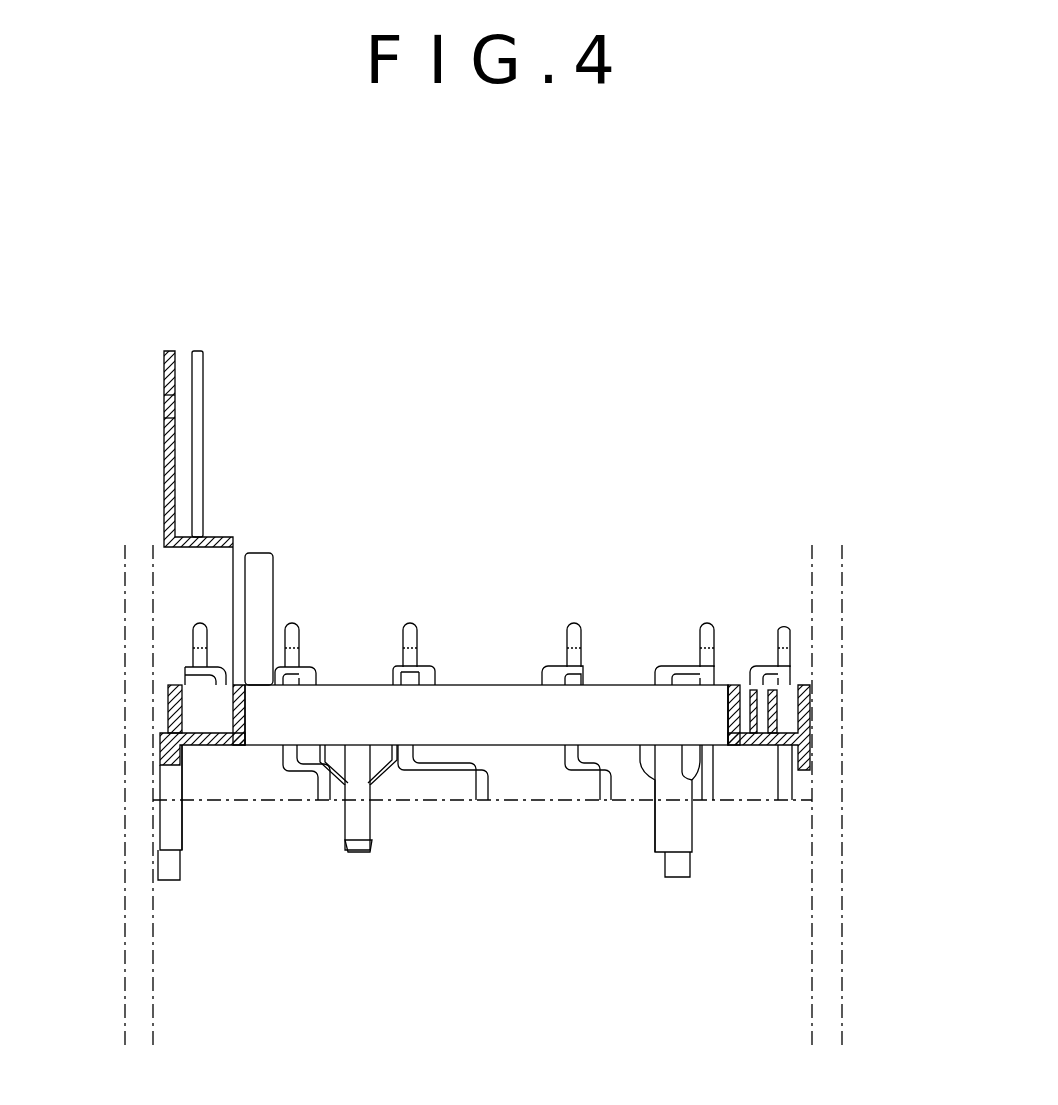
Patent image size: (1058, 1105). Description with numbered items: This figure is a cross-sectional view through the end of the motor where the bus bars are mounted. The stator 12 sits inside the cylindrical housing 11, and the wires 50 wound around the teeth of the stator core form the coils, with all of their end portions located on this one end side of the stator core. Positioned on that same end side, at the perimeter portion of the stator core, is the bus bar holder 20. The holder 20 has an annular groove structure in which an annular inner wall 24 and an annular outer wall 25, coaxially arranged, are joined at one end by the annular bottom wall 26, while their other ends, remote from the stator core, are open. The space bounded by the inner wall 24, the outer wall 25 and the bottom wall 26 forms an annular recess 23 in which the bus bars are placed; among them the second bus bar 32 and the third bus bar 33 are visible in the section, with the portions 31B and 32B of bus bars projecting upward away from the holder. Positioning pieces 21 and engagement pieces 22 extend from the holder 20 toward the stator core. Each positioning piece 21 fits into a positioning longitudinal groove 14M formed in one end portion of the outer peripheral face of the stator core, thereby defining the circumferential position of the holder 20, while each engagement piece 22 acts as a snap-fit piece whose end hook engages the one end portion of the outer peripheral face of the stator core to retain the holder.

The cylindrical housing 11 is at (830, 935).
The stator 12 is at (773, 1008).
The positioning longitudinal groove 14M is at (180, 873).
The bus bar holder 20 is at (488, 683).
The positioning piece 21 is at (178, 835).
The engagement piece 22 is at (345, 820).
The annular recess 23 is at (186, 682).
The annular inner wall 24 is at (725, 722).
The annular outer wall 25 is at (812, 715).
The annular bottom wall 26 is at (767, 750).
The bus bar 31B is at (163, 440).
The second bus bar 32 is at (766, 690).
The bus bar terminal 32B is at (205, 465).
The third bus bar 33 is at (742, 690).
The wire 50 is at (300, 650).